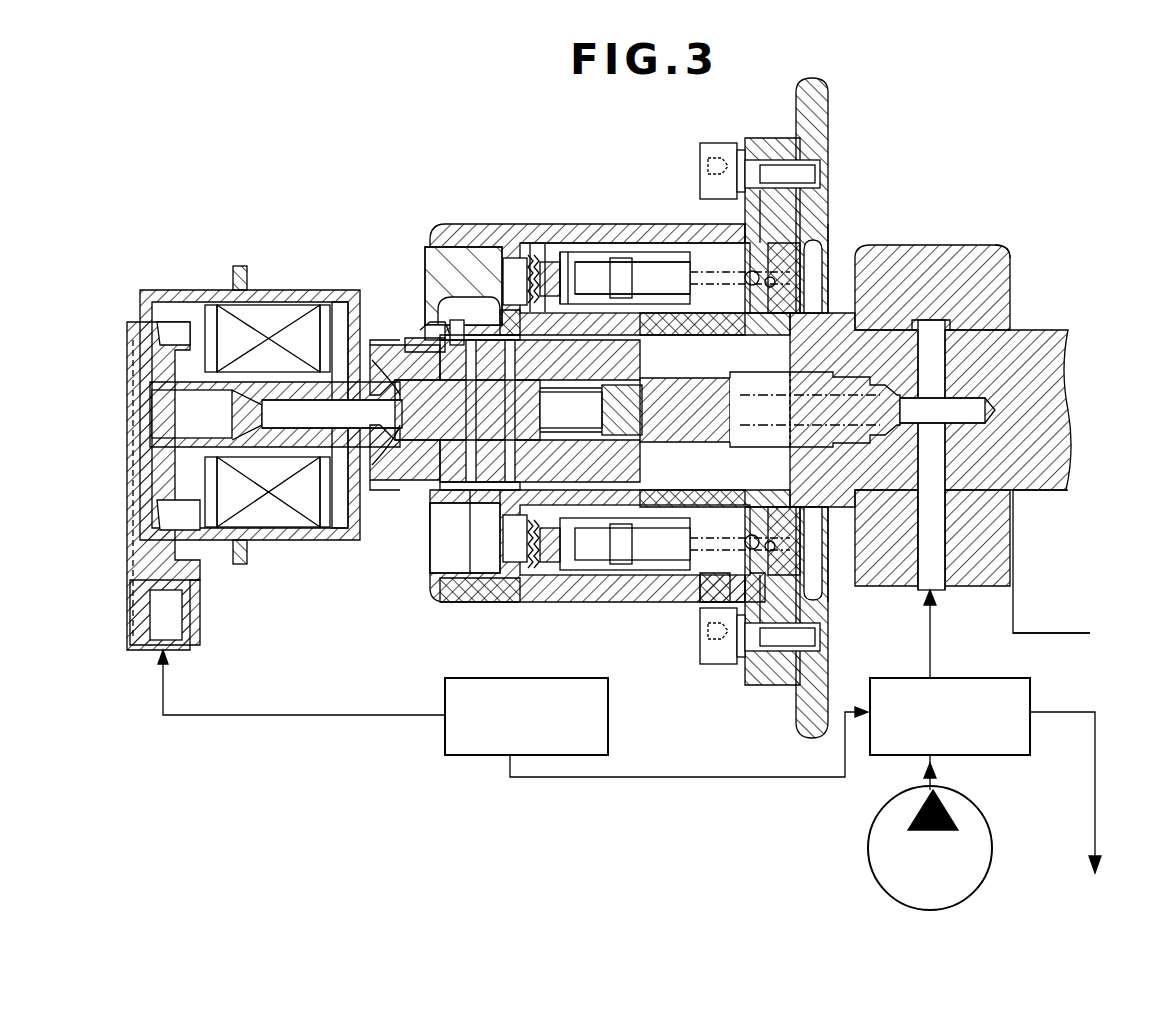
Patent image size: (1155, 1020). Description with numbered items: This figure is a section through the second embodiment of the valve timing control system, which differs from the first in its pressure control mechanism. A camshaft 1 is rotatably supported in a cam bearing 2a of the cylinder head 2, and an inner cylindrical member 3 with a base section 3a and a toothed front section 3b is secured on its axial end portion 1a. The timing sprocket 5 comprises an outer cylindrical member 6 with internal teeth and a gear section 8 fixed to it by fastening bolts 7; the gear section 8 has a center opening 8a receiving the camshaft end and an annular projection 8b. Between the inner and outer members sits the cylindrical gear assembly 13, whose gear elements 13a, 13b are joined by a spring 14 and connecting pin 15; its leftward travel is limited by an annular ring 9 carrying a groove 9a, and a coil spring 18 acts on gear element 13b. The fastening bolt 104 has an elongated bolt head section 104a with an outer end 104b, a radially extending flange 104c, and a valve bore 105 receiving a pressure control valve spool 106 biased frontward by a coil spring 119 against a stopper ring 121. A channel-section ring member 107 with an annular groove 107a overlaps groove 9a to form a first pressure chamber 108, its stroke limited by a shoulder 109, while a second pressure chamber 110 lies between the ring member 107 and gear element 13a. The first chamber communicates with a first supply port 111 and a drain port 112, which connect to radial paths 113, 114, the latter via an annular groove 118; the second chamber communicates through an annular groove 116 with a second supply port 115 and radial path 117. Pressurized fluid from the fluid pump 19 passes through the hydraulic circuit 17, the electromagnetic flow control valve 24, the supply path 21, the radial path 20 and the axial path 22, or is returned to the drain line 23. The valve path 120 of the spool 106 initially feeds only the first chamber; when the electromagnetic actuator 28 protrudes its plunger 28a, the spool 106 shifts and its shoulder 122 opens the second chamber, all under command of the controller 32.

The camshaft 1 is at (1022, 348).
The axial end portion 1a is at (926, 258).
The cylinder head 2 is at (1045, 640).
The cam bearing 2a is at (1000, 268).
The inner cylindrical member 3 is at (770, 262).
The base section 3a is at (565, 562).
The section of inner cylindrical member 3b is at (460, 602).
The timing sprocket 5 is at (672, 154).
The outer cylindrical member 6 is at (500, 240).
The fastening bolts 7 is at (716, 146).
The gear section 8 is at (815, 122).
The center opening 8a is at (832, 310).
The annular projection 8b is at (800, 232).
The annular ring 9 is at (470, 310).
The groove 9a is at (440, 602).
The cylindrical gear assembly 13 is at (615, 252).
The gear element 13a is at (580, 252).
The gear element 13b is at (650, 252).
The spring 14 is at (598, 252).
The connecting pin 15 is at (605, 252).
The hydraulic circuit 17 is at (700, 565).
The coil spring 18 is at (617, 562).
The fluid pump 19 is at (1020, 757).
The radial path 20 is at (945, 355).
The supply path 21 is at (940, 528).
The axial path 22 is at (785, 447).
The drain line 23 is at (1095, 832).
The electromagnetic flow control valve 24 is at (1032, 702).
The electromagnetic actuator 28 is at (165, 290).
The plunger 28a is at (290, 385).
The controller 32 is at (490, 756).
The fastening bolt 104 is at (682, 602).
The bolt head section 104a is at (440, 562).
The outer end 104b is at (372, 497).
The radially extending flange 104c is at (440, 542).
The valve bore 105 is at (645, 440).
The pressure control valve spool 106 is at (395, 380).
The ring member 107 is at (540, 562).
The annular groove 107a is at (492, 330).
The first pressure chamber 108 is at (437, 325).
The shoulder 109 is at (560, 602).
The second pressure chamber 110 is at (565, 602).
The first supply port 111 is at (457, 322).
The drain port 112 is at (425, 330).
The radial path 113 is at (520, 248).
The radial path 114 is at (413, 340).
The second supply port 115 is at (676, 336).
The annular groove 116 is at (545, 250).
The radial path 117 is at (560, 250).
The annular groove 118 is at (500, 495).
The coil spring 119 is at (642, 370).
The valve path 120 is at (520, 410).
The stopper ring 121 is at (385, 522).
The shoulder 122 is at (375, 345).